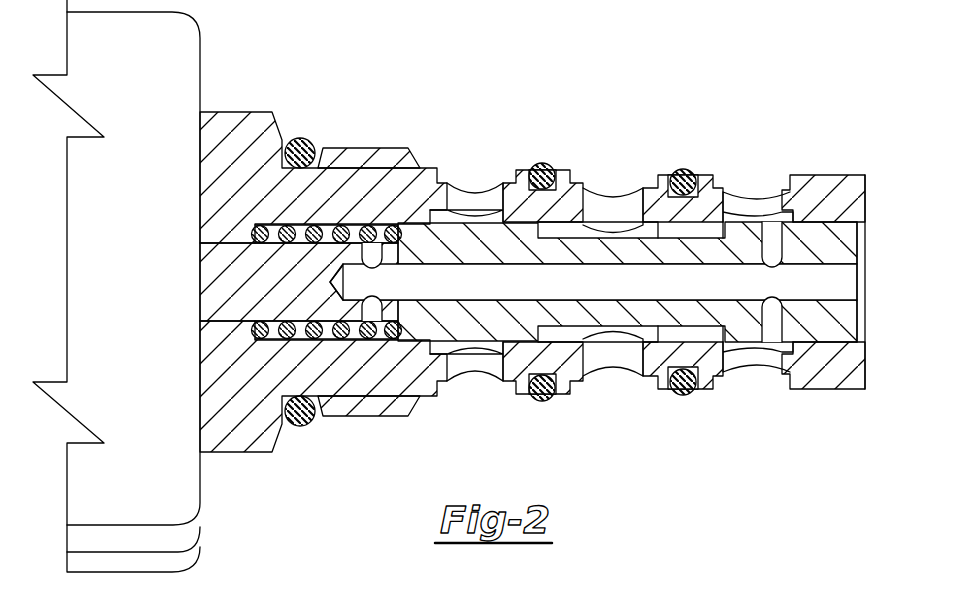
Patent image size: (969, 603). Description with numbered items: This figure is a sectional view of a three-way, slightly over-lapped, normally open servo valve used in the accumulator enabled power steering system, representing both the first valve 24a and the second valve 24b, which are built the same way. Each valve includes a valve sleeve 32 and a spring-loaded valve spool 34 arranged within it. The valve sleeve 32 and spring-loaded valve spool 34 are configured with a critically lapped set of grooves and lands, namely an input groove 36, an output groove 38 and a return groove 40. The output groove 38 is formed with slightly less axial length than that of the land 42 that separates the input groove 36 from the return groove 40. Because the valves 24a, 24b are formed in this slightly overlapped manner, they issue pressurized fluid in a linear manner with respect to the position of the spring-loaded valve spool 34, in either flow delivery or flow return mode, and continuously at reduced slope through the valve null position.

The first valve 24a is at (547, 226).
The second valve 24b is at (650, 68).
The valve sleeve 32 is at (375, 148).
The spring-loaded valve spool 34 is at (868, 250).
The input groove 36 is at (450, 213).
The output groove 38 is at (660, 222).
The return groove 40 is at (727, 210).
The land 42 is at (664, 342).